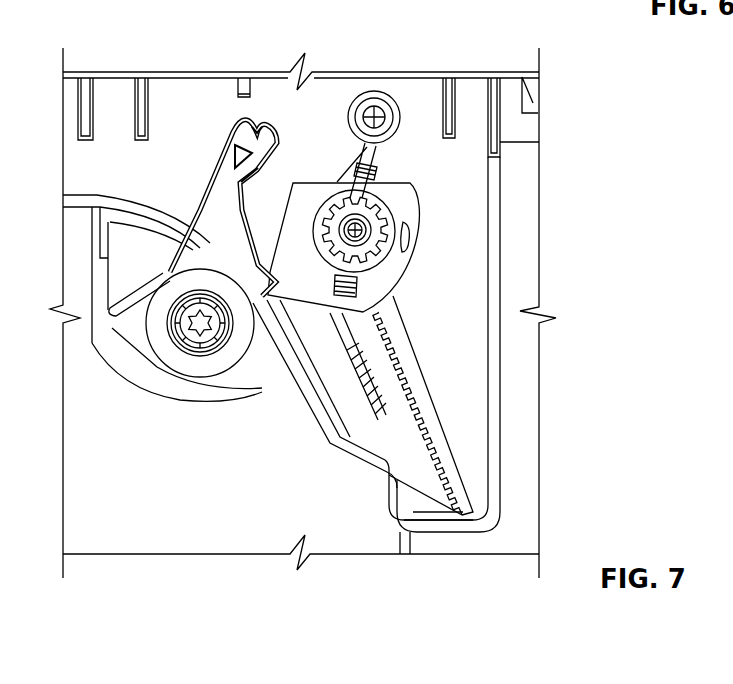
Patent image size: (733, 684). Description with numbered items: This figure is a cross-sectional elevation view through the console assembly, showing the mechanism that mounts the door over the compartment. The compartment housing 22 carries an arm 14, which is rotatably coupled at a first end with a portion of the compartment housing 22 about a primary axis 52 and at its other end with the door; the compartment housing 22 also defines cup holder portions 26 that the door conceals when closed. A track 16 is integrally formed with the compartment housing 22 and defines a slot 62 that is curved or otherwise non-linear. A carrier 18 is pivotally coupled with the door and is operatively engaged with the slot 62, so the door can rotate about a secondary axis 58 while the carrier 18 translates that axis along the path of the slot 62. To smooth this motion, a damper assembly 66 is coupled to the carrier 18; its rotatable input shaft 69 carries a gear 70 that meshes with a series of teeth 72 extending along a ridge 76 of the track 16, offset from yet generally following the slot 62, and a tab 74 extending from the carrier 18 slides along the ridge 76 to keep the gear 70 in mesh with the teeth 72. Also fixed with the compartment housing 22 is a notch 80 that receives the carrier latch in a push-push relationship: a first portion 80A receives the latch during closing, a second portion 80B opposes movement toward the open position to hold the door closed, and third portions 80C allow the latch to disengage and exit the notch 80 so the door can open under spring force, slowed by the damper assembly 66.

The arm 14 is at (237, 363).
The track 16 is at (406, 430).
The carrier 18 is at (400, 278).
The compartment housing 22 is at (473, 563).
The cup holder portions 26 is at (372, 537).
The primary axis 52 is at (193, 338).
The secondary axis 58 is at (375, 95).
The slot 62 is at (363, 420).
The damper assembly 66 is at (366, 191).
The input shaft 69 is at (392, 281).
The gear 70 is at (393, 208).
The teeth 72 is at (423, 520).
The tab 74 is at (408, 236).
The ridge 76 is at (455, 458).
The notch 80 is at (252, 125).
The first portion 80A is at (235, 157).
The second portion 80B is at (250, 131).
The third portions 80C is at (260, 170).